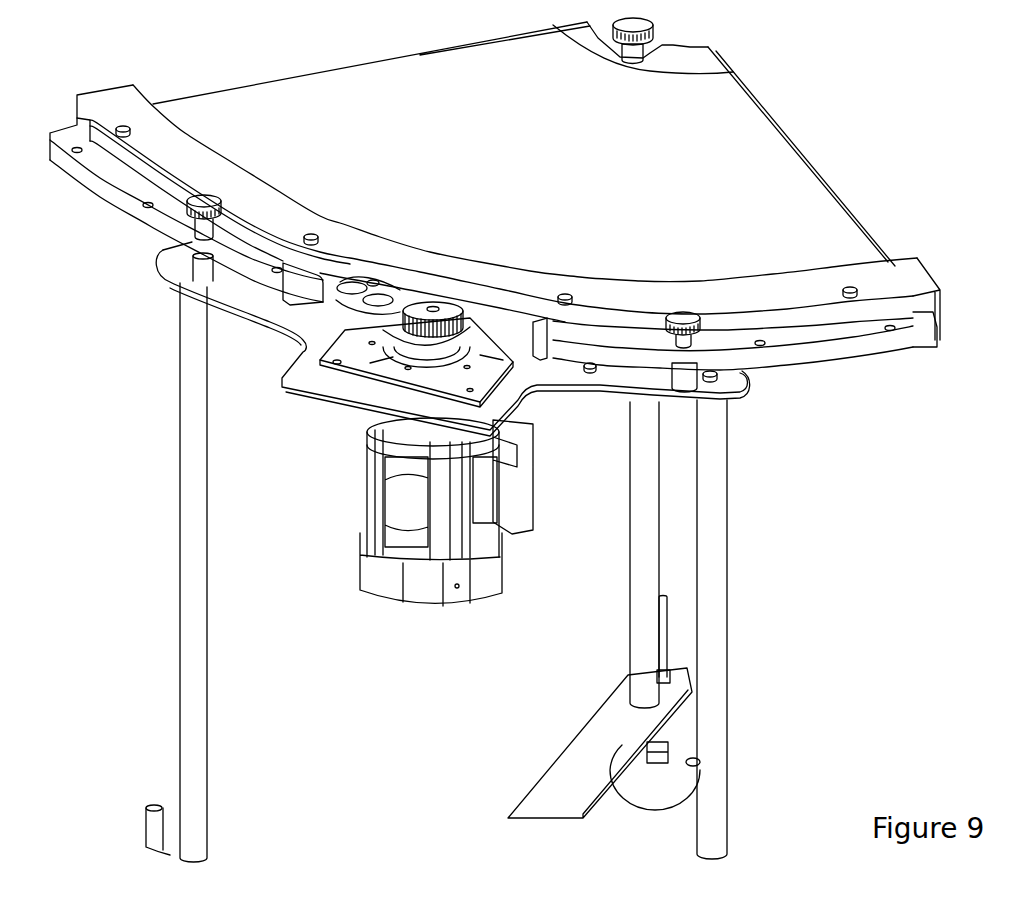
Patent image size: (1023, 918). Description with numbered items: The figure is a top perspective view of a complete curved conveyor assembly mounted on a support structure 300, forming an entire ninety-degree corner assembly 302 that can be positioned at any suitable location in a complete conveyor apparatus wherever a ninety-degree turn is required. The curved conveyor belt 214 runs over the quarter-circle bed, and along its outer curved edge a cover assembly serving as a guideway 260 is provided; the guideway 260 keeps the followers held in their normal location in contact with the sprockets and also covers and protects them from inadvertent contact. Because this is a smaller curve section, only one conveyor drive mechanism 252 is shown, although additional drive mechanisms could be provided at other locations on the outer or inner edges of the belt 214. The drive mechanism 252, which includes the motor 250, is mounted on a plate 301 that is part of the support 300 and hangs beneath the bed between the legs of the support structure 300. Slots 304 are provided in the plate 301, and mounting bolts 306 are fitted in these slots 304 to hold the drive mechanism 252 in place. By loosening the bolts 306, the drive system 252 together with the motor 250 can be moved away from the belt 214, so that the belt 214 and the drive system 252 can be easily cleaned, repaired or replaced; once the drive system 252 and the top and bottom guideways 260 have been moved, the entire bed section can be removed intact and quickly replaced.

The conveyor belt 214 is at (572, 166).
The motor 250 is at (425, 590).
The conveyor drive mechanism 252 is at (408, 494).
The guideway 260 is at (751, 289).
The support structure 300 is at (717, 707).
The plate 301 is at (590, 383).
The corner assembly 302 is at (825, 543).
The slots 304 is at (325, 380).
The mounting bolts 306 is at (332, 361).